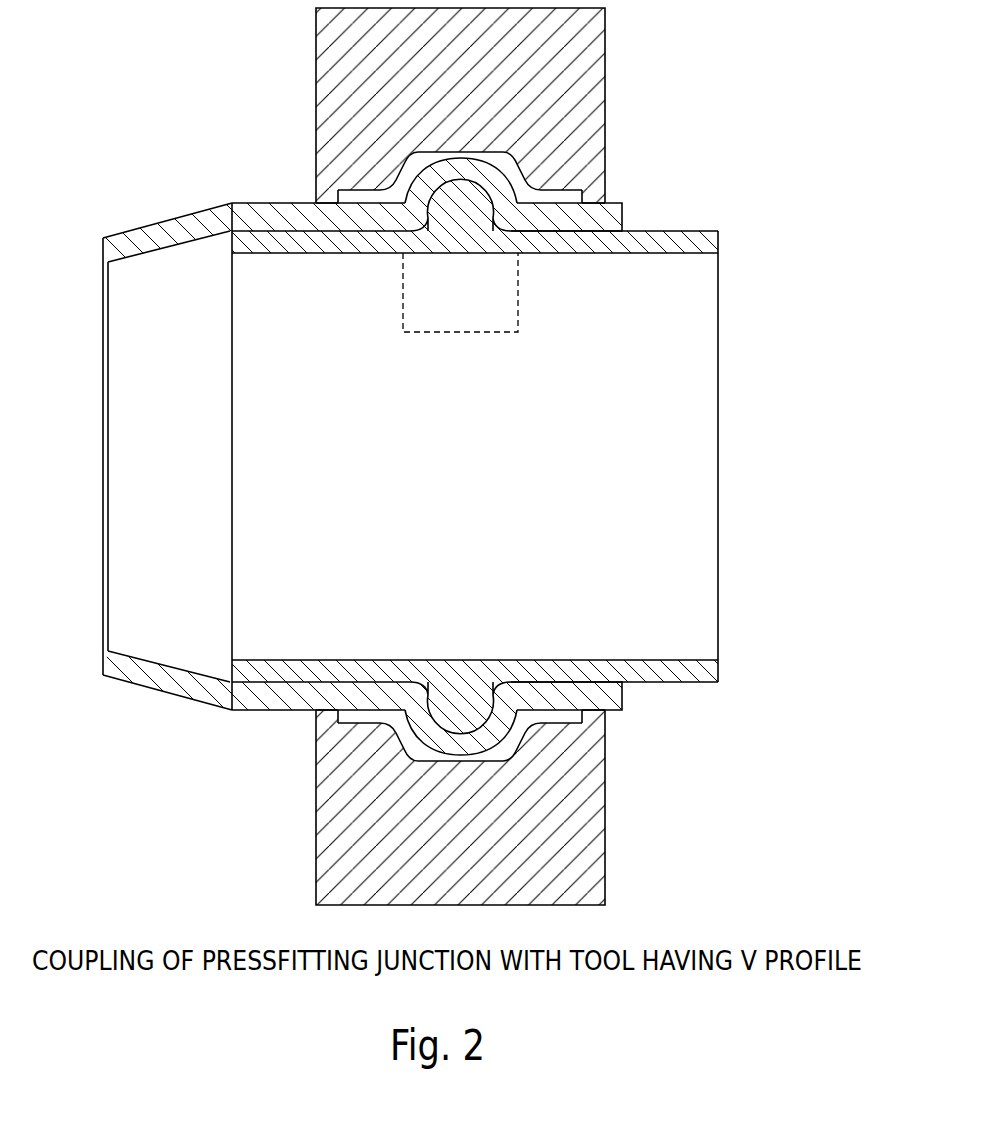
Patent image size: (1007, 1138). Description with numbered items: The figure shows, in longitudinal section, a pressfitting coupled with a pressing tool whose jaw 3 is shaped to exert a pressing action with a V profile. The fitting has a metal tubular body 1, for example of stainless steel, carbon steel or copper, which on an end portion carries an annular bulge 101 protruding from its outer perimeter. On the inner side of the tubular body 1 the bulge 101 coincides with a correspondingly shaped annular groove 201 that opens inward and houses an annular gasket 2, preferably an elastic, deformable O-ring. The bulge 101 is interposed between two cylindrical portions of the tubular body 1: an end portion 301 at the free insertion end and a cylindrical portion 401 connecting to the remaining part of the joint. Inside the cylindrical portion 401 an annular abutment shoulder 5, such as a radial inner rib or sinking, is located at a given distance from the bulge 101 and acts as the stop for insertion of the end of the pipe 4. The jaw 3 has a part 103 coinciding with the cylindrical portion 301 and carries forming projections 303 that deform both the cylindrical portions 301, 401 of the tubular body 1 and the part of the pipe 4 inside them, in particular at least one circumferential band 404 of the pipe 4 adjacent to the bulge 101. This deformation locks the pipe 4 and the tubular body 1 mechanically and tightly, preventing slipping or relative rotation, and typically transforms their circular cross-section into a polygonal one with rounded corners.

The tubular body 1 is at (449, 409).
The annular gasket 2 is at (485, 409).
The jaw 3 is at (472, 453).
The pipe 4 is at (514, 456).
The annular abutment shoulder 5 is at (228, 232).
The annular bulge 101 is at (458, 166).
The part of the jaw 103 is at (363, 183).
The annular groove 201 is at (472, 185).
The end portion 301 is at (335, 211).
The forming projections 303 is at (321, 192).
The cylindrical portion 401 is at (603, 215).
The circumferential band 404 is at (462, 328).